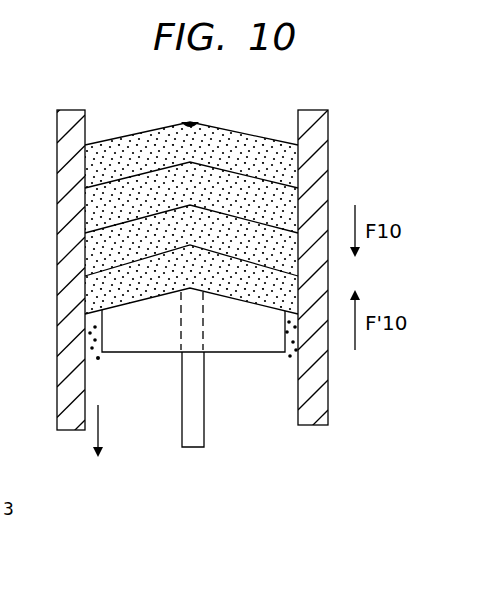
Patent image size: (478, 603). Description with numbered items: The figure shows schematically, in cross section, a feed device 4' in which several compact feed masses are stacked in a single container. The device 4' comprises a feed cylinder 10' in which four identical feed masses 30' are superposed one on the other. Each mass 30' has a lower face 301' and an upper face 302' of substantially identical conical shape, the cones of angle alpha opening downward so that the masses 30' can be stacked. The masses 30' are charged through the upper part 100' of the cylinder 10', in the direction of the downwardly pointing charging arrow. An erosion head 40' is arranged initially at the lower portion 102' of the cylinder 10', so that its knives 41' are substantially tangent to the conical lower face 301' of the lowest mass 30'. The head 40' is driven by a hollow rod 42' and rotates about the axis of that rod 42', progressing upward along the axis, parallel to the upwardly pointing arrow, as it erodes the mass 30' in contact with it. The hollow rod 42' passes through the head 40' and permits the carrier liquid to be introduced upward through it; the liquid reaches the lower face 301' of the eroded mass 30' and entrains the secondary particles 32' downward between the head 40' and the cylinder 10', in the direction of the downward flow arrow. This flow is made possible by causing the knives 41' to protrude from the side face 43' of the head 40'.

The upper part 100' is at (187, 267).
The feed cylinder 10' is at (56, 267).
The feed device 4' is at (331, 275).
The feed masses 30' is at (194, 208).
The upper face 302' is at (191, 124).
The lower face 301' is at (191, 186).
The erosion head 40' is at (191, 335).
The knives 41' is at (191, 307).
The hollow rod 42' is at (211, 399).
The side face 43' is at (193, 339).
The secondary particles 32' is at (112, 373).
The lower portion 102' is at (84, 405).